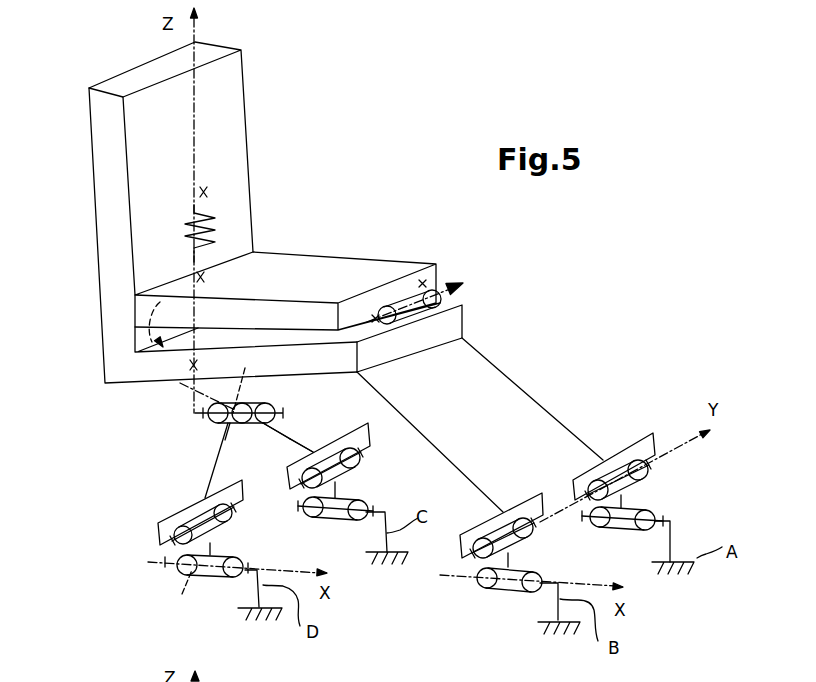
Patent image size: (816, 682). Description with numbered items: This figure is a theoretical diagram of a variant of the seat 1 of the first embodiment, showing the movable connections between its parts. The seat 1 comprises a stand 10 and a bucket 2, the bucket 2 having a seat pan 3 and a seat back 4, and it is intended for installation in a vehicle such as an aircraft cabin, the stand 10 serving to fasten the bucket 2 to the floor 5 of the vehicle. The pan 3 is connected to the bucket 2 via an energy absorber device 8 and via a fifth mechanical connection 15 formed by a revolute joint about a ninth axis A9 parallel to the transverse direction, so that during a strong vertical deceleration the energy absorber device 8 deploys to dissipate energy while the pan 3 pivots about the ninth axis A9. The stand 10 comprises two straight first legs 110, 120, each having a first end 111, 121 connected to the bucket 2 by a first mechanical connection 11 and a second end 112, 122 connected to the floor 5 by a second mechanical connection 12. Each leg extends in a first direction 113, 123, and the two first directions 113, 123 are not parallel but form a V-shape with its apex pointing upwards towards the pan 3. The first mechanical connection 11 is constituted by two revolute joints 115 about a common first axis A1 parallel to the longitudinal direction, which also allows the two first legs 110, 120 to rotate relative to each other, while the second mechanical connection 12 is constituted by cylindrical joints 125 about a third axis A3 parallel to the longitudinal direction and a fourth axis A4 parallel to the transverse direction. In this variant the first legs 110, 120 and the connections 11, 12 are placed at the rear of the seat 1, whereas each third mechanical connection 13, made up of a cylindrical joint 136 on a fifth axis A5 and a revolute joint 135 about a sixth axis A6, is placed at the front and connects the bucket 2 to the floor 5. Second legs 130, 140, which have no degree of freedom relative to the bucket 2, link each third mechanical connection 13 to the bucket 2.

The seat 1 is at (383, 140).
The bucket 2 is at (107, 180).
The seat pan 3 is at (323, 268).
The seat back 4 is at (232, 97).
The floor 5 is at (240, 600).
The energy absorber device 8 is at (208, 222).
The stand 10 is at (118, 452).
The first mechanical connection 11 is at (180, 410).
The second mechanical connection 12 is at (172, 583).
The third mechanical connection 13 is at (638, 498).
The fifth mechanical connection 15 is at (405, 283).
The first leg 110 is at (282, 428).
The first end 111 is at (255, 430).
The second end 112 is at (313, 452).
The first direction 113 is at (180, 383).
The revolute joint 115 is at (243, 403).
The first leg 120 is at (207, 460).
The first end 121 is at (230, 425).
The second end 122 is at (192, 488).
The first direction 123 is at (182, 593).
The cylindrical joint 125 is at (172, 548).
The second leg 130 is at (520, 387).
The revolute joint 135 is at (607, 460).
The cylindrical joint 136 is at (600, 531).
The second leg 140 is at (452, 462).
The first axis A1 is at (267, 403).
The third axis A3 is at (240, 580).
The fourth axis A4 is at (242, 523).
The fifth axis A5 is at (657, 505).
The sixth axis A6 is at (540, 503).
The ninth axis A9 is at (440, 293).